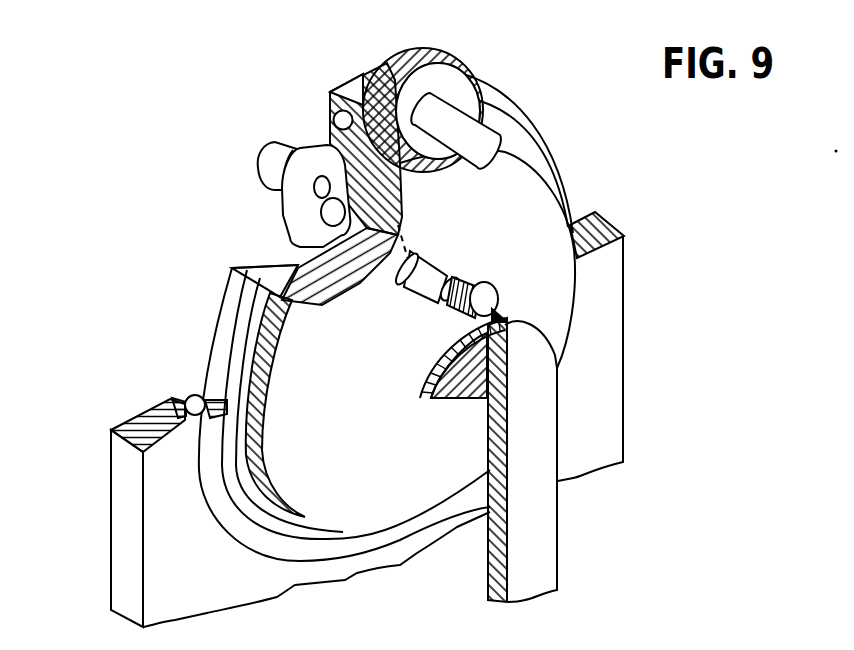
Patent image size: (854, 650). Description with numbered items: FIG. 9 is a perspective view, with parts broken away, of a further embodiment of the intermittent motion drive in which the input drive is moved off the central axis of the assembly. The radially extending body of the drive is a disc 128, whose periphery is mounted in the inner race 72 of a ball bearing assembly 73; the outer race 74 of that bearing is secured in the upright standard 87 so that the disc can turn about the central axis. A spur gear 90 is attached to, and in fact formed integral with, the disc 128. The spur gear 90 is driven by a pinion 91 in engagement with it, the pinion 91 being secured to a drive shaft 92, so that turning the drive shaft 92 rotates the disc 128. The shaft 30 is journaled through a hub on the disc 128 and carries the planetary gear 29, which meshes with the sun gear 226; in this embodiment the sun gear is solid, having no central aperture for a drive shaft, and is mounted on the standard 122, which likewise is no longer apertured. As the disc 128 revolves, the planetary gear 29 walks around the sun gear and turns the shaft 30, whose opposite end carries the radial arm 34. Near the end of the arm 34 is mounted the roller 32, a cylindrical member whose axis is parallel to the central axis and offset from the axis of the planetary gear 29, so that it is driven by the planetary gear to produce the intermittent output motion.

The planetary gear 29 is at (488, 290).
The shaft 30 is at (462, 280).
The roller 32 is at (268, 153).
The radial arm 34 is at (290, 203).
The inner race 72 is at (198, 395).
The ball bearing assembly 73 is at (142, 377).
The outer race 74 is at (172, 398).
The standard 87 is at (111, 524).
The spur gear 90 is at (266, 408).
The pinion 91 is at (452, 80).
The drive shaft 92 is at (485, 128).
The standard 122 is at (550, 523).
The disc 128 is at (227, 308).
The gear segment 226 is at (432, 350).